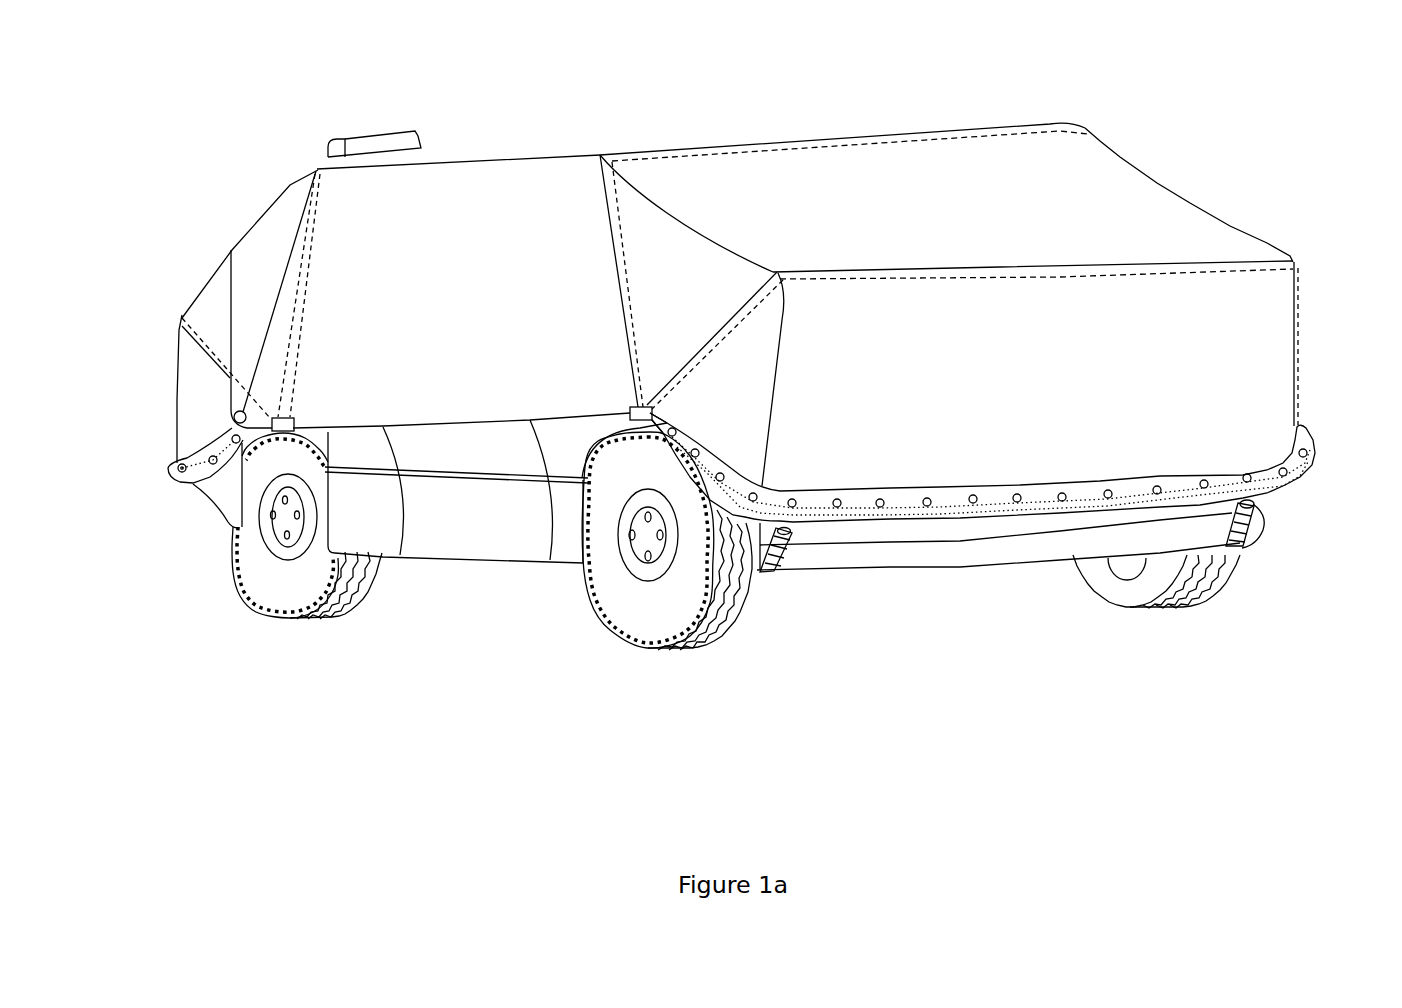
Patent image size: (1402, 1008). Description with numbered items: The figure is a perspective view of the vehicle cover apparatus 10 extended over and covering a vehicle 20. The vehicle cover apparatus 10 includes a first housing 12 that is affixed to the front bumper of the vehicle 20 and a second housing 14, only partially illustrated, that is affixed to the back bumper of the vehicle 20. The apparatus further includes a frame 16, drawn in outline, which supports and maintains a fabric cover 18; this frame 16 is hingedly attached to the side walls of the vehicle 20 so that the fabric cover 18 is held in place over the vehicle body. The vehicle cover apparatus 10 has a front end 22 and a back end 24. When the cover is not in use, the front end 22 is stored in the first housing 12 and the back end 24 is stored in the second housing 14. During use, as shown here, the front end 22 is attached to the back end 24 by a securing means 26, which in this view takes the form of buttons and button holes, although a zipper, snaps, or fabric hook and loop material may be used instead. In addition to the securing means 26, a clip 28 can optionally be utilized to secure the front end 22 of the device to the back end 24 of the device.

The vehicle cover apparatus 10 is at (1120, 157).
The first housing 12 is at (808, 508).
The second housing 14 is at (177, 477).
The frame 16 is at (1295, 265).
The fabric cover 18 is at (1273, 377).
The vehicle 20 is at (463, 553).
The front end 22 is at (1167, 217).
The back end 24 is at (188, 405).
The securing means 26 is at (232, 412).
The clip 28 is at (372, 135).